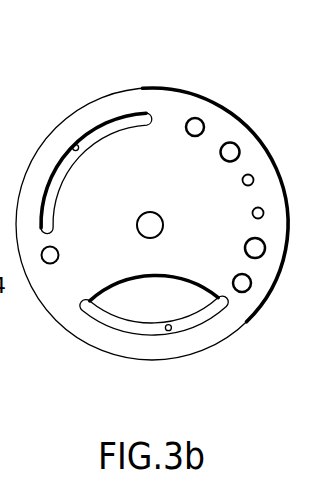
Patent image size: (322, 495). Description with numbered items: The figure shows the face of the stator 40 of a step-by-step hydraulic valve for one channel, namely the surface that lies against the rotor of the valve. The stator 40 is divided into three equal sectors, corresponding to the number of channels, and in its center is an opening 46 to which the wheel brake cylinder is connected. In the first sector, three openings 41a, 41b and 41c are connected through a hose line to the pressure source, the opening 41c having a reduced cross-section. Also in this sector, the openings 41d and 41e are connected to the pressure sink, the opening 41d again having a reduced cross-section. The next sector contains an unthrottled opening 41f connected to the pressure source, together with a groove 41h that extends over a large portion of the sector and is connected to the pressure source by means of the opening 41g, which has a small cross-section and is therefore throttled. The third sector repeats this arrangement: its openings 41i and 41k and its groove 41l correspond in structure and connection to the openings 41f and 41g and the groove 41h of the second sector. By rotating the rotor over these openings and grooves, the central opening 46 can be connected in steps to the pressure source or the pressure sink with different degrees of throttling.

The stator 40 is at (153, 359).
The opening 46 is at (152, 211).
The opening 41a is at (196, 126).
The opening 41b is at (231, 150).
The opening 41c is at (252, 178).
The opening 41d is at (260, 218).
The opening 41e is at (257, 252).
The unthrottled opening 41f is at (243, 288).
The opening 41g is at (169, 331).
The groove 41h is at (113, 323).
The opening 41i is at (49, 257).
The opening 41k is at (73, 144).
The groove 41l is at (53, 174).